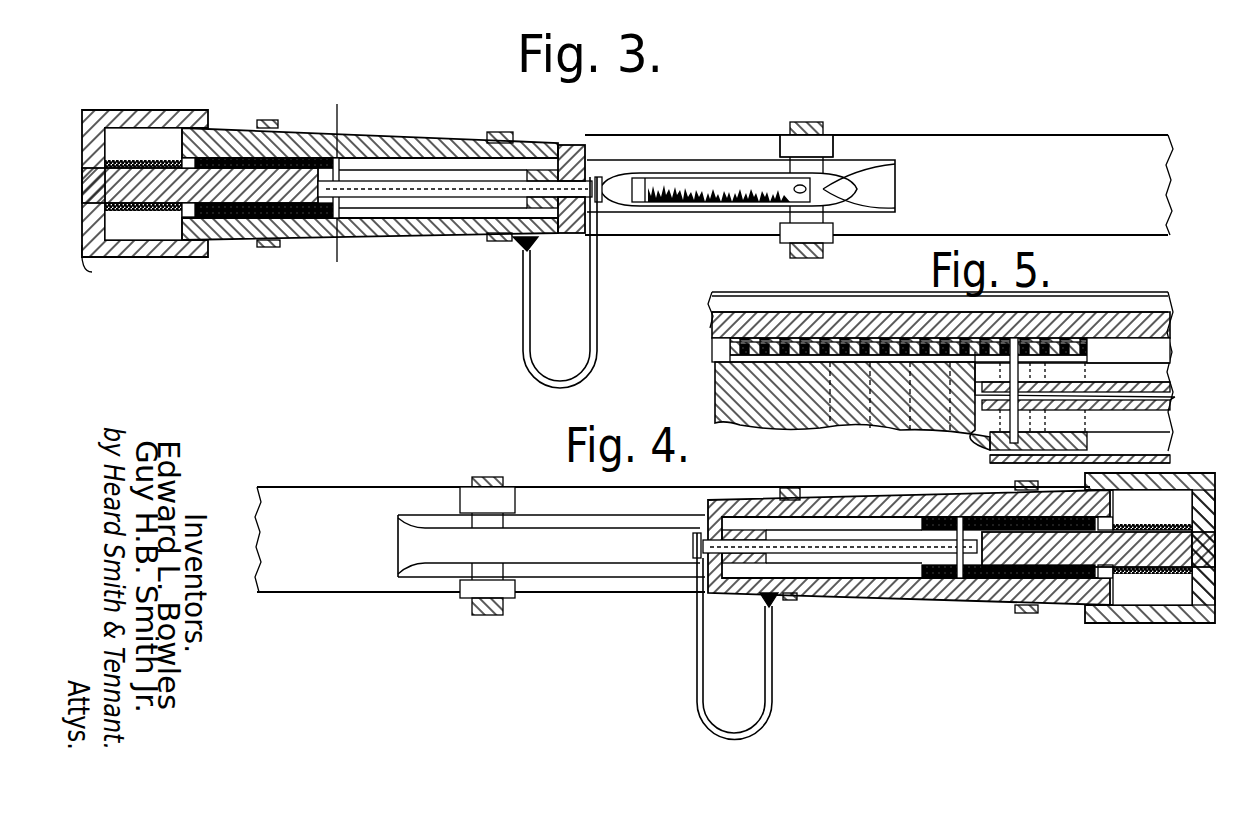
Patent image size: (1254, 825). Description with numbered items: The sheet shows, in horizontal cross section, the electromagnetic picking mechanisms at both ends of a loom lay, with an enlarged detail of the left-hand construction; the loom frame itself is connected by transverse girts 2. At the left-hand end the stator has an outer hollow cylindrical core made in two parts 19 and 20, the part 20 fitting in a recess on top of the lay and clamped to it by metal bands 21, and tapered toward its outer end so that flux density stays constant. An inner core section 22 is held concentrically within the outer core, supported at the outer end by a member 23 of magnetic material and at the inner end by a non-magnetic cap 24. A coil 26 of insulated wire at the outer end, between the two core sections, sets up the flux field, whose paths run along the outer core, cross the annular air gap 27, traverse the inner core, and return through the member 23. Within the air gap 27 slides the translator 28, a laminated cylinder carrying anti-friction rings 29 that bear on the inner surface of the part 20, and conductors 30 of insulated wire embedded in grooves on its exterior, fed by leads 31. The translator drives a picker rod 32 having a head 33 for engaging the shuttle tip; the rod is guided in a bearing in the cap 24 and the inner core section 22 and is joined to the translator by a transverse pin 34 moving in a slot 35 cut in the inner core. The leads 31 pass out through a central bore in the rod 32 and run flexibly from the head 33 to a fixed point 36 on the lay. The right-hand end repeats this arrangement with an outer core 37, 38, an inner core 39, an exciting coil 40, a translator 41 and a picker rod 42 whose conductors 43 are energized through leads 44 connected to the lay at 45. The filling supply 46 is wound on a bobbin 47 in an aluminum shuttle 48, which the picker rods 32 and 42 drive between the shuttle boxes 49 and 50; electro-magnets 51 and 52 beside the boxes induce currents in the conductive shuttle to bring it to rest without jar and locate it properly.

In FIG. 3, the transverse girt 2 is at (337, 183).
In FIG. 3, the outer core section part 19 is at (145, 113).
In FIG. 3, the outer core section part 20 is at (283, 140).
In FIG. 5, the outer core section part 20 is at (738, 322).
In FIG. 3, the metal bands 21 is at (497, 242).
In FIG. 3, the inner core section 22 is at (180, 185).
In FIG. 5, the inner core section 22 is at (728, 385).
In FIG. 3, the supporting member 23 is at (101, 265).
In FIG. 3, the cap 24 is at (588, 145).
In FIG. 3, the coil 26 is at (170, 237).
In FIG. 3, the annular air gap 27 is at (447, 163).
In FIG. 5, the annular air gap 27 is at (1150, 345).
In FIG. 3, the translator 28 is at (290, 217).
In FIG. 5, the translator 28 is at (870, 345).
In FIG. 3, the anti-friction rings 29 is at (198, 157).
In FIG. 5, the anti-friction rings 29 is at (725, 345).
In FIG. 3, the conductors 30 is at (248, 215).
In FIG. 5, the conductors 30 is at (830, 345).
In FIG. 5, the leads 31 is at (1165, 398).
In FIG. 3, the picker rod 32 is at (440, 192).
In FIG. 5, the picker rod 32 is at (1160, 412).
In FIG. 3, the head 33 is at (603, 177).
In FIG. 3, the transverse pin 34 is at (345, 212).
In FIG. 5, the transverse pin 34 is at (1010, 420).
In FIG. 3, the transverse slot 35 is at (515, 176).
In FIG. 5, the transverse slot 35 is at (1155, 372).
In FIG. 3, the fixed point on the lay 36 is at (533, 244).
In FIG. 4, the outer core part 37 is at (988, 600).
In FIG. 4, the outer core part 38 is at (1122, 623).
In FIG. 4, the inner cylindrical core 39 is at (1200, 520).
In FIG. 4, the exciting coil 40 is at (1170, 500).
In FIG. 4, the translator 41 is at (1045, 582).
In FIG. 4, the picker rod 42 is at (838, 556).
In FIG. 4, the conductors 43 is at (962, 517).
In FIG. 4, the leads 44 is at (773, 654).
In FIG. 4, the lay connection point 45 is at (752, 596).
In FIG. 3, the filling supply 46 is at (812, 122).
In FIG. 3, the bobbin 47 is at (803, 186).
In FIG. 3, the shuttle 48 is at (708, 178).
In FIG. 3, the shuttle box 49 is at (898, 188).
In FIG. 4, the shuttle box 50 is at (405, 548).
In FIG. 3, the electro-magnet 51 is at (790, 143).
In FIG. 4, the electro-magnet 52 is at (468, 500).